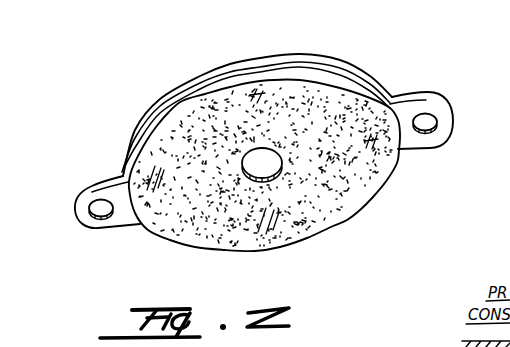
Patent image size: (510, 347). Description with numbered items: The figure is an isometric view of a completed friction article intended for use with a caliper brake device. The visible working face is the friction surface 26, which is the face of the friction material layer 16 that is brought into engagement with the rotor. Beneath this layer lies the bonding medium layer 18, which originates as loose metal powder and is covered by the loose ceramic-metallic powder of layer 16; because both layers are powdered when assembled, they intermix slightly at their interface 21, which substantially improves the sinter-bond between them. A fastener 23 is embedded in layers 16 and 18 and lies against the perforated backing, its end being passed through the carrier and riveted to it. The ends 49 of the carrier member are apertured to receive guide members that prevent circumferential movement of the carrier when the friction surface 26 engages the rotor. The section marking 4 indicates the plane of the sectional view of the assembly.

The friction material layer 16 is at (160, 130).
The bonding medium layer 18 is at (243, 68).
The interface 21 is at (327, 73).
The friction surface 26 is at (372, 192).
The fastener 23 is at (262, 163).
The ends of carrier 49 is at (85, 198).
The section line 4- 4 is at (42, 237).